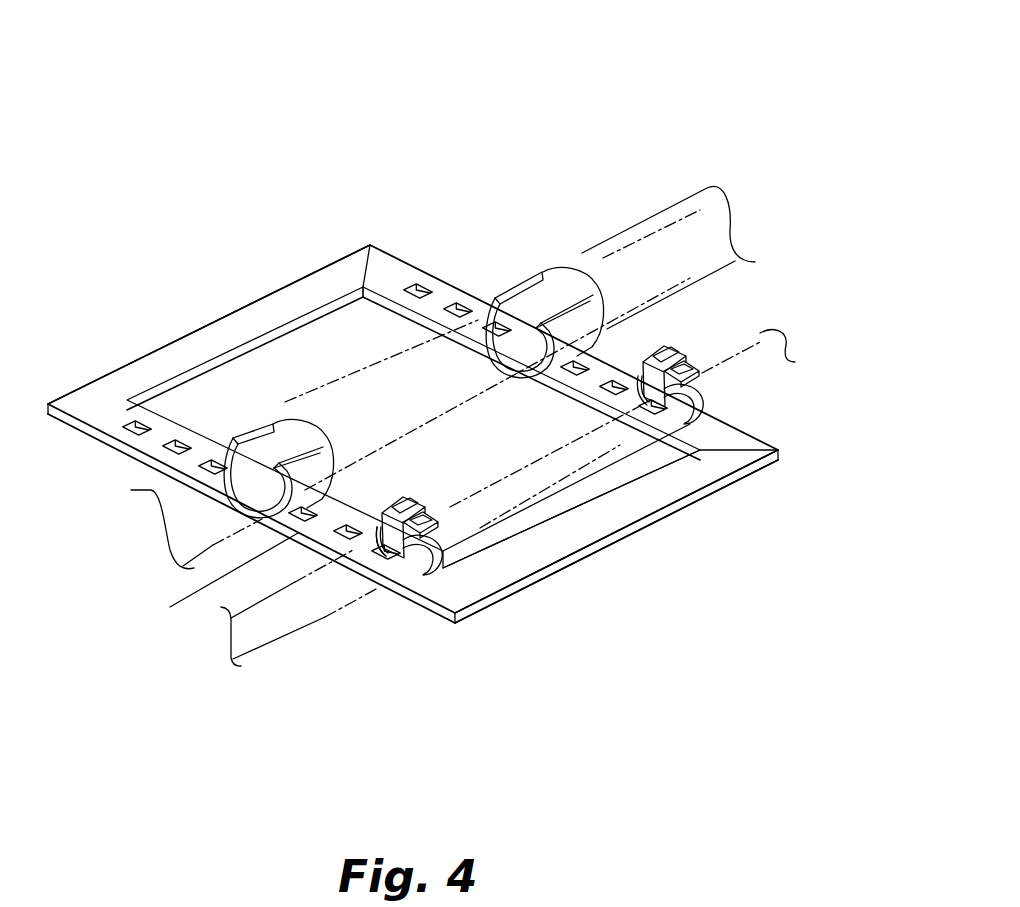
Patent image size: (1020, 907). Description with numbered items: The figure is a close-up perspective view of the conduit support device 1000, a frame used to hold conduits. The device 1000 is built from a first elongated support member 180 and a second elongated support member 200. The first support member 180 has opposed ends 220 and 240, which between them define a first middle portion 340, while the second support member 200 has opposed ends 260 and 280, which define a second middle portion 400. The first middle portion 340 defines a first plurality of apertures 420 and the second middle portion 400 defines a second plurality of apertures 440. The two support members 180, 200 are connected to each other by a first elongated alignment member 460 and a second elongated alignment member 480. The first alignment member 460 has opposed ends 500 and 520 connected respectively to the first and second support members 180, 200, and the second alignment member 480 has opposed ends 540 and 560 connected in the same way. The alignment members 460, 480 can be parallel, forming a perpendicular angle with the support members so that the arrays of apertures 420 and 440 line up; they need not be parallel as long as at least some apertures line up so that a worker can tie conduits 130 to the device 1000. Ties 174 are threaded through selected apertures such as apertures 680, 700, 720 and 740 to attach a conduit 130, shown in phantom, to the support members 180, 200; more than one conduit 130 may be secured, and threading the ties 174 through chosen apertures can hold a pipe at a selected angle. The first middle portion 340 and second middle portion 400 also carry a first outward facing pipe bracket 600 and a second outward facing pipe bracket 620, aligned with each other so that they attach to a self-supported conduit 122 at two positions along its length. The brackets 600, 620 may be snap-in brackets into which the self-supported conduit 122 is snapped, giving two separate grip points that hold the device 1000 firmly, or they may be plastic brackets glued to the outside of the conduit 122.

The conduit support device 1000 is at (163, 115).
The second elongated support member 200 is at (120, 443).
The opposed end 260 is at (55, 420).
The opposed end 240 is at (780, 436).
The opposed end 280 is at (452, 614).
The opposed end of first alignment member 520 is at (116, 378).
The first elongated alignment member 460 is at (272, 302).
The opposed end of first alignment member 500 is at (372, 262).
The first middle portion 340 is at (448, 286).
The first plurality of apertures 420 is at (460, 300).
The second plurality of apertures 440 is at (165, 465).
The second middle portion 400 is at (160, 485).
The opposed end of second alignment member 540 is at (736, 462).
The second elongated alignment member 480 is at (630, 522).
The selected aperture 700 is at (722, 472).
The opposed end of second alignment member 560 is at (490, 585).
The first outward facing pipe bracket 600 is at (490, 296).
The first elongated support member 180 is at (456, 292).
The opposed end 220 is at (457, 280).
The self-supported conduit 122 is at (632, 240).
The conduit 130 is at (757, 373).
The second outward facing pipe bracket 620 is at (252, 436).
The selected aperture 740 is at (419, 576).
The selected aperture 720 is at (383, 552).
The selected aperture 680 is at (648, 362).
The tie 174 is at (727, 447).